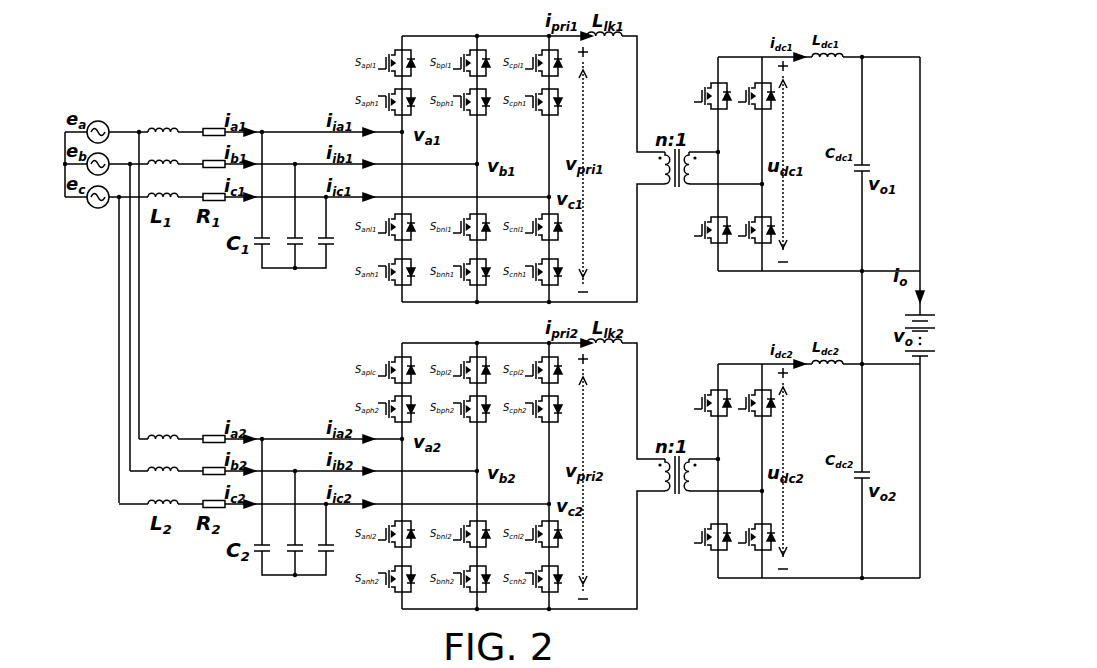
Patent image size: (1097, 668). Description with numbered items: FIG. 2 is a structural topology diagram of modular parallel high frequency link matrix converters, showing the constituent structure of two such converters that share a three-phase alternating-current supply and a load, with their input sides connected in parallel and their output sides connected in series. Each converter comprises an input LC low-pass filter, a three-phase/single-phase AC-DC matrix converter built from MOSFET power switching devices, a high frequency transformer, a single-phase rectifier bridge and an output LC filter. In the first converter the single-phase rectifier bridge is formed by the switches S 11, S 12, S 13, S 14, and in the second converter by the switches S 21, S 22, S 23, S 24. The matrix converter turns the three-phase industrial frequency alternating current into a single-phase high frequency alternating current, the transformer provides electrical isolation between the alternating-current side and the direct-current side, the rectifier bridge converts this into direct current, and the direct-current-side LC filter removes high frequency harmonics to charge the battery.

The secondary switch S11 11 is at (709, 88).
The secondary switch S12 12 is at (756, 88).
The secondary switch S13 13 is at (709, 223).
The secondary switch S14 14 is at (756, 223).
The secondary switch S21 21 is at (709, 395).
The secondary switch S22 22 is at (756, 395).
The secondary switch S23 23 is at (709, 530).
The secondary switch S24 24 is at (756, 530).